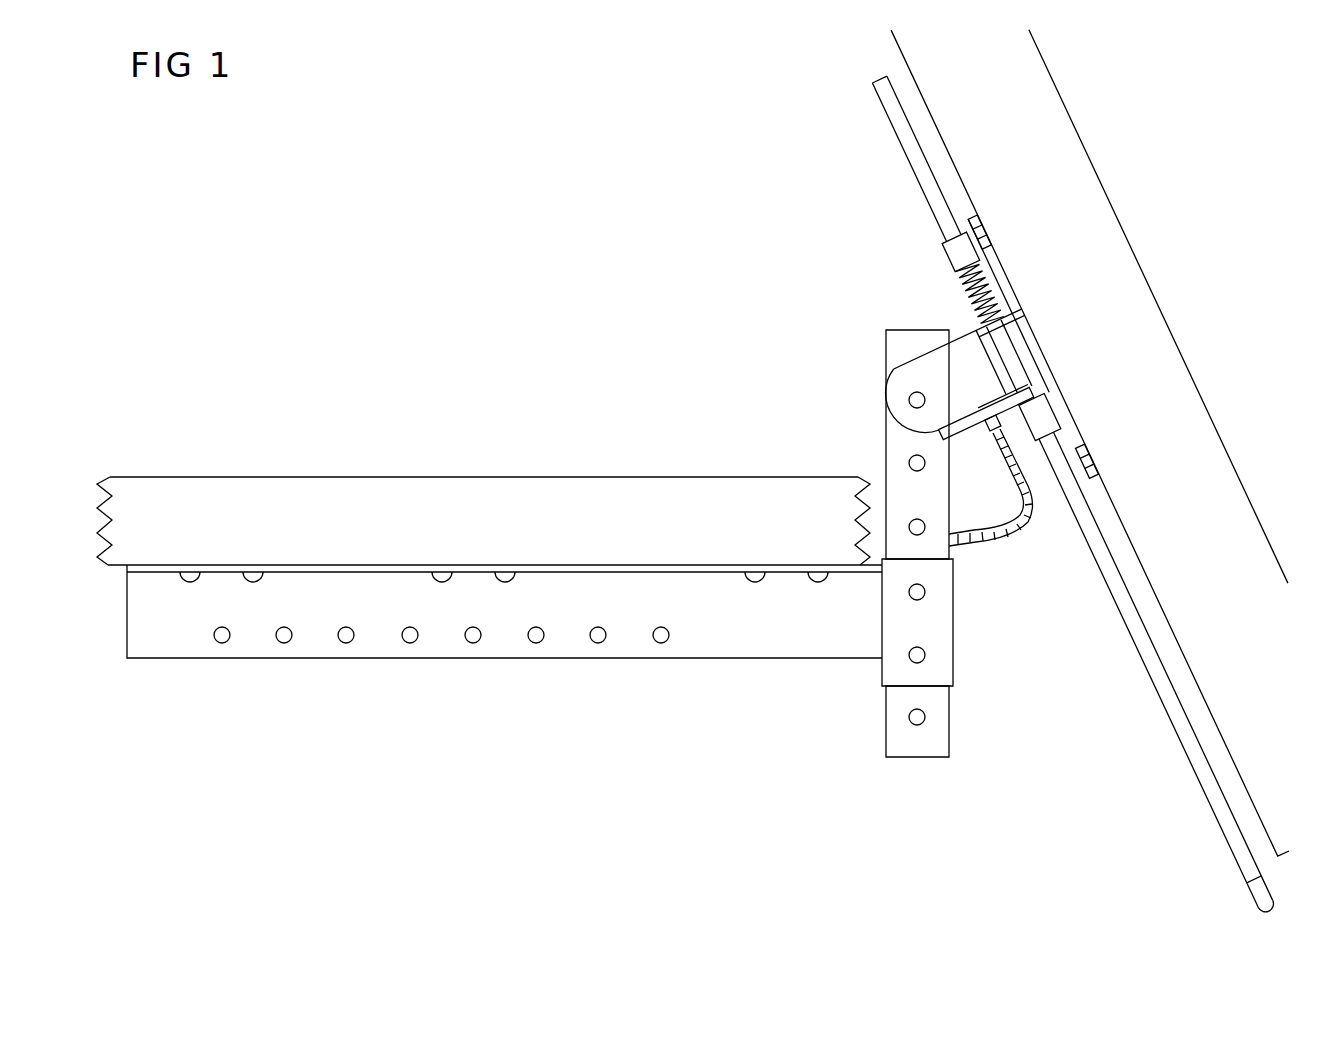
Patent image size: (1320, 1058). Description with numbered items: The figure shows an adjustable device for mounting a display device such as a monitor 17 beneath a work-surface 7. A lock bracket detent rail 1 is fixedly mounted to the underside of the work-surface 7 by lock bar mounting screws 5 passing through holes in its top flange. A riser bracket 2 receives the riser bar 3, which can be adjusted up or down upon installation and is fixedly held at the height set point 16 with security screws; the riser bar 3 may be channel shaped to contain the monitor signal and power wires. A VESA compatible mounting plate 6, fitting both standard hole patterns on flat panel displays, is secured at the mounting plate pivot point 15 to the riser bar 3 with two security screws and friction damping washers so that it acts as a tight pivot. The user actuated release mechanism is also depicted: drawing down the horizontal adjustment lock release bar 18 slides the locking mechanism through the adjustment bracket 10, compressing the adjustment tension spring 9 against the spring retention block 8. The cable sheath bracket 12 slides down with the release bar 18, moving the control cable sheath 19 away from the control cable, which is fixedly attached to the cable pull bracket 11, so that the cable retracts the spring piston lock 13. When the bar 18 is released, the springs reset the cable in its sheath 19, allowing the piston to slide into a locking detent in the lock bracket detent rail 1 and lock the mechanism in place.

The lock bracket detent rail 1 is at (378, 662).
The riser bracket 2 is at (957, 557).
The riser bar 3 is at (953, 721).
The lock bar mounting screws 5 is at (196, 579).
The mounting plate 6 is at (880, 381).
The work-surface 7 is at (487, 477).
The spring retention block 8 is at (945, 262).
The adjustment tension spring 9 is at (968, 307).
The adjustment bracket 10 is at (988, 366).
The cable pull bracket 11 is at (965, 411).
The cable sheath bracket 12 is at (977, 427).
The spring piston lock 13 is at (222, 640).
The mounting plate pivot point 15 is at (909, 402).
The height set point 16 is at (921, 596).
The monitor 17 is at (1180, 343).
The horizontal adjustment lock release bar 18 is at (1262, 910).
The control cable sheath 19 is at (1026, 512).